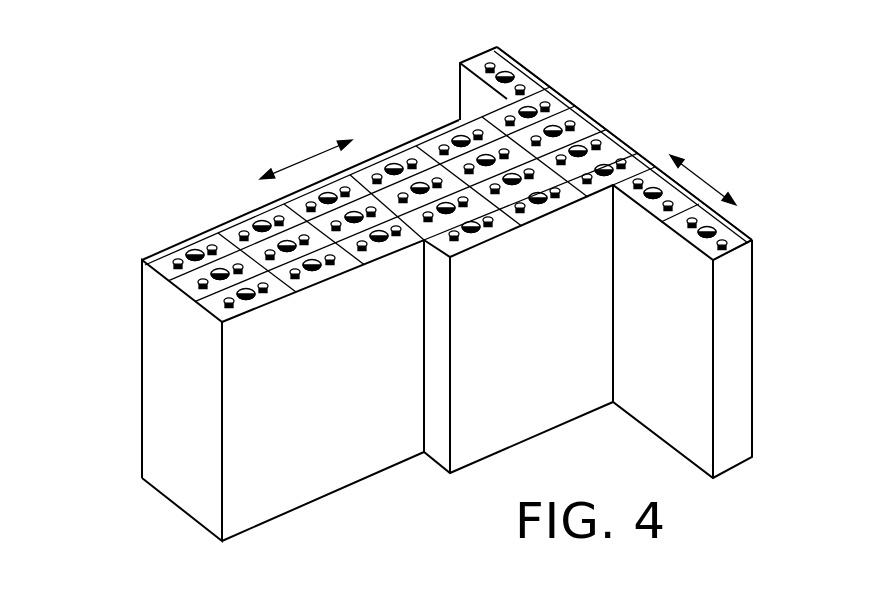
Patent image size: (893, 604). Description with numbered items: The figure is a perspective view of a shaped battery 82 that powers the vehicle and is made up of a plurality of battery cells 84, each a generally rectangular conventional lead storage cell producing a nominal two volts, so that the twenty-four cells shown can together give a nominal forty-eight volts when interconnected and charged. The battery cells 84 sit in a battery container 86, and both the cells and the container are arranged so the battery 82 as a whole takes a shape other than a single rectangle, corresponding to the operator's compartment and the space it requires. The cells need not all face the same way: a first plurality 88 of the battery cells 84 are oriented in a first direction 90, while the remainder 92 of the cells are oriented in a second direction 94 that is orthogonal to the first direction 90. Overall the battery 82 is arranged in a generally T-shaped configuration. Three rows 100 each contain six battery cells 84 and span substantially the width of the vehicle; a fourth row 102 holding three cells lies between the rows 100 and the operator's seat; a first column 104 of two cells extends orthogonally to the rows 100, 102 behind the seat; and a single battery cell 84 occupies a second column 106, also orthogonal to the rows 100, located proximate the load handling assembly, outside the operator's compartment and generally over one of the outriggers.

The shaped battery 82 is at (128, 316).
The battery cell 84 is at (202, 248).
The battery container 86 is at (755, 240).
The first plurality of battery cells 88 is at (431, 129).
The first direction 90 is at (306, 165).
The remainder of the battery cells 92 is at (474, 48).
The second direction 94 is at (726, 196).
The rows 100 is at (573, 96).
The fourth row 102 is at (657, 151).
The first column 104 is at (752, 217).
The second column 106 is at (531, 61).